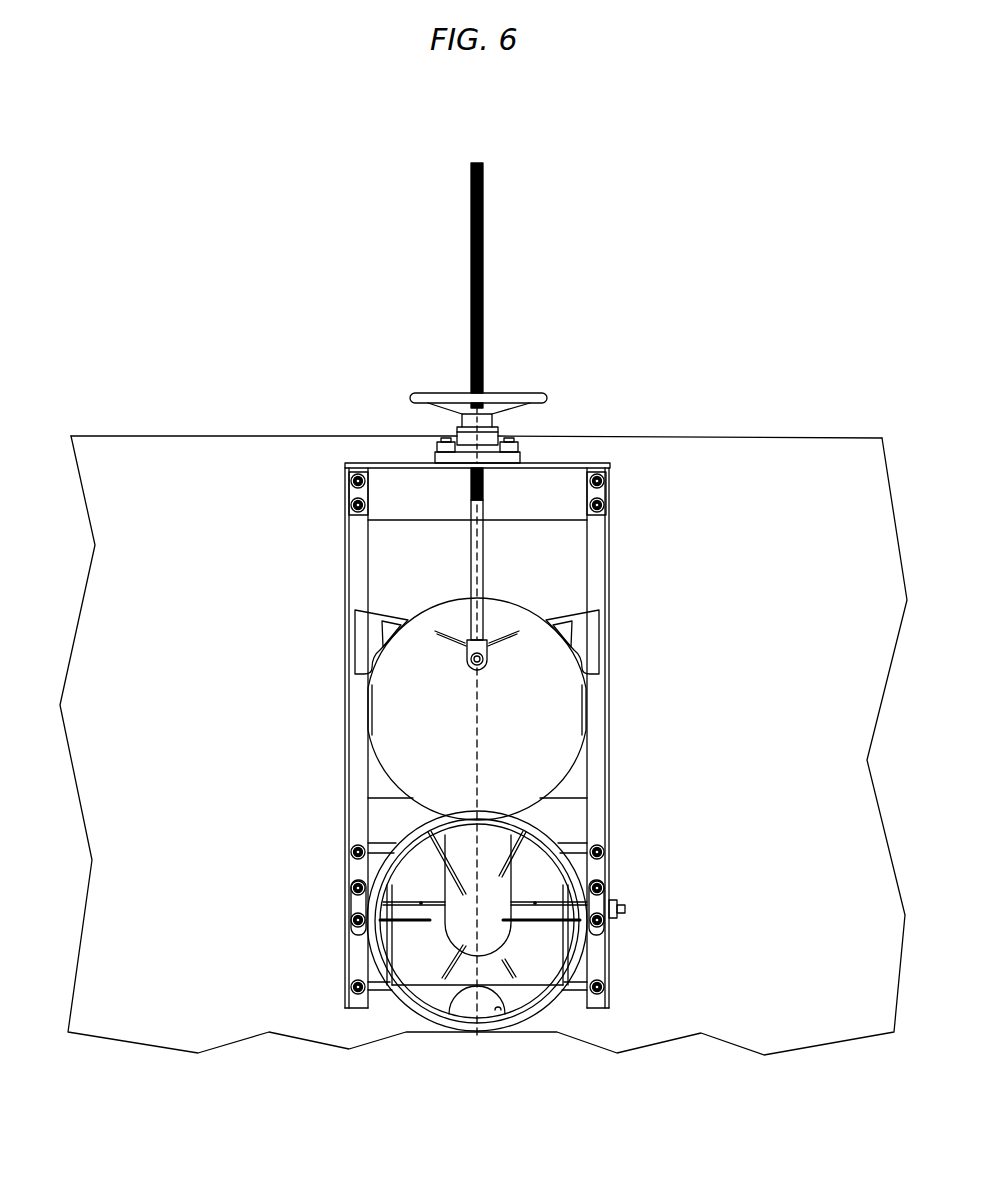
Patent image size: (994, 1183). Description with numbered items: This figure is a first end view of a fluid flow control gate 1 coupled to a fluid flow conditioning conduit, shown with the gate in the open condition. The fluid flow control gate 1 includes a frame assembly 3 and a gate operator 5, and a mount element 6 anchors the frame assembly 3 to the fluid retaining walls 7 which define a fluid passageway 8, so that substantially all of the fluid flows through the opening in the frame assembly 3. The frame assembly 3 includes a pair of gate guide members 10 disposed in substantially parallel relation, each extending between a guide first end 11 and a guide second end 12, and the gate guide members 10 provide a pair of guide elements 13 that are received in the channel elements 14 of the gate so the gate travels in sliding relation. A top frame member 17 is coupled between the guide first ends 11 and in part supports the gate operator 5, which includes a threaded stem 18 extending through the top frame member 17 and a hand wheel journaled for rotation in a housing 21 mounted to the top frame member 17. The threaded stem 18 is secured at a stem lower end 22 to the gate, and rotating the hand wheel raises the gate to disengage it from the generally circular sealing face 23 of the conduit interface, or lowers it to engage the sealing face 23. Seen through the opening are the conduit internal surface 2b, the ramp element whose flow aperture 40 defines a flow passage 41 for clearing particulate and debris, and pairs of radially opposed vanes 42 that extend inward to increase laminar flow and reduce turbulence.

The fluid flow control gate 1 is at (383, 414).
The frame assembly 3 is at (492, 728).
The gate operator 5 is at (547, 386).
The mount element 6 is at (350, 852).
The fluid retaining walls 7 is at (224, 734).
The fluid passageway 8 is at (303, 386).
The gate guide members 10 is at (347, 590).
The guide first end 11 is at (346, 553).
The guide second end 12 is at (350, 930).
The guide elements 13 is at (360, 666).
The channel elements 14 is at (356, 624).
The top frame member 17 is at (573, 483).
The threaded stem 18 is at (483, 276).
The housing 21 is at (502, 433).
The stem lower end 22 is at (480, 600).
The sealing face 23 is at (575, 872).
The flow passage 41 is at (487, 1016).
The flow aperture 40 is at (446, 1000).
The vanes 42 is at (410, 944).
The conduit internal surface 2b is at (498, 1012).